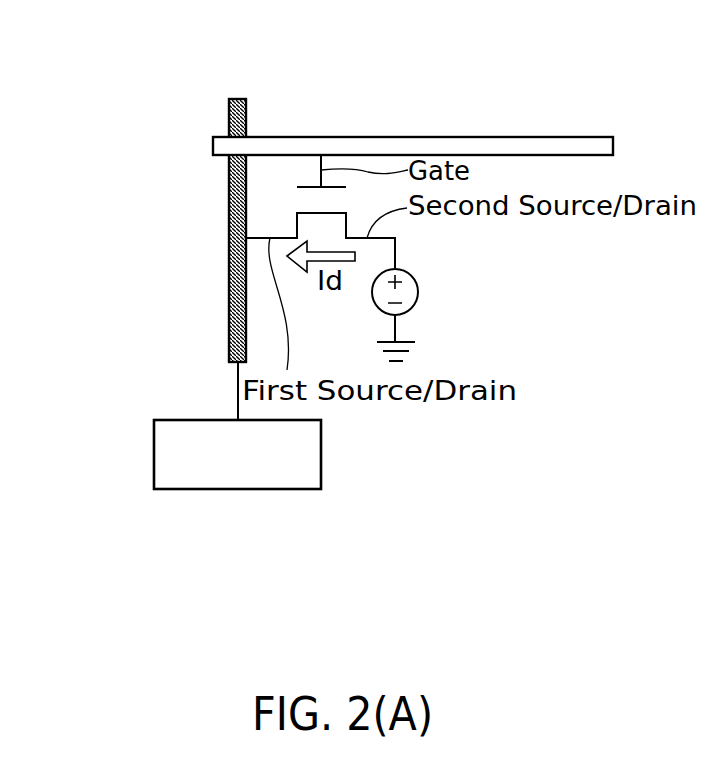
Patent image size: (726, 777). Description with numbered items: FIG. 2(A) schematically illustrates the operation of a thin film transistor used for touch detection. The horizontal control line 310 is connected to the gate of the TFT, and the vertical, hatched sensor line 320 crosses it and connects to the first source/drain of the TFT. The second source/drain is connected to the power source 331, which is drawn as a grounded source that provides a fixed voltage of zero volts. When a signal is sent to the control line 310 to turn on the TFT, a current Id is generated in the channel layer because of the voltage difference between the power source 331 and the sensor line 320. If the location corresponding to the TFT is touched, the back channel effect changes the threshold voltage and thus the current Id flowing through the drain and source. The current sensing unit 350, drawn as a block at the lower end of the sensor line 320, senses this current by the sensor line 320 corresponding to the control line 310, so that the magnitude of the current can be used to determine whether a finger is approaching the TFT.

The control line 310 is at (213, 146).
The sensor line 320 is at (240, 98).
The power source 331 is at (418, 291).
The current sensing unit 350 is at (154, 458).